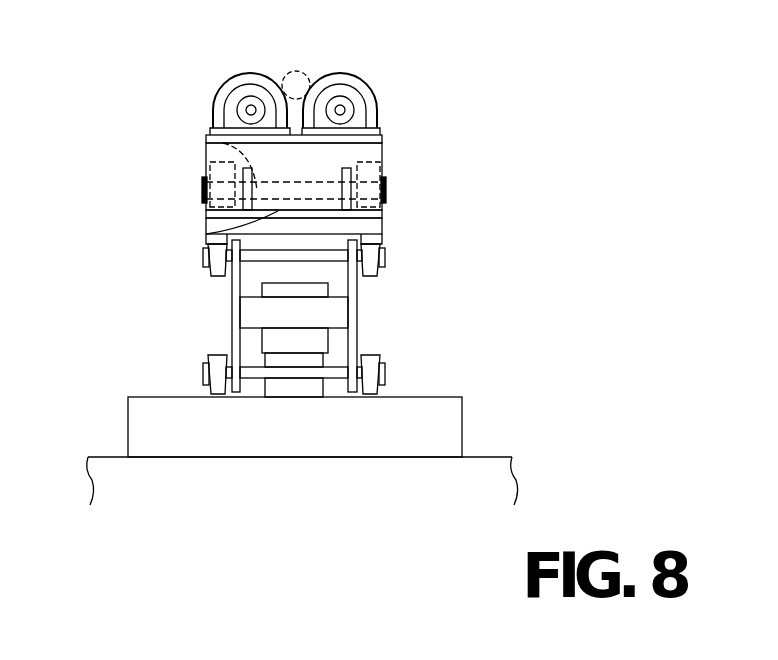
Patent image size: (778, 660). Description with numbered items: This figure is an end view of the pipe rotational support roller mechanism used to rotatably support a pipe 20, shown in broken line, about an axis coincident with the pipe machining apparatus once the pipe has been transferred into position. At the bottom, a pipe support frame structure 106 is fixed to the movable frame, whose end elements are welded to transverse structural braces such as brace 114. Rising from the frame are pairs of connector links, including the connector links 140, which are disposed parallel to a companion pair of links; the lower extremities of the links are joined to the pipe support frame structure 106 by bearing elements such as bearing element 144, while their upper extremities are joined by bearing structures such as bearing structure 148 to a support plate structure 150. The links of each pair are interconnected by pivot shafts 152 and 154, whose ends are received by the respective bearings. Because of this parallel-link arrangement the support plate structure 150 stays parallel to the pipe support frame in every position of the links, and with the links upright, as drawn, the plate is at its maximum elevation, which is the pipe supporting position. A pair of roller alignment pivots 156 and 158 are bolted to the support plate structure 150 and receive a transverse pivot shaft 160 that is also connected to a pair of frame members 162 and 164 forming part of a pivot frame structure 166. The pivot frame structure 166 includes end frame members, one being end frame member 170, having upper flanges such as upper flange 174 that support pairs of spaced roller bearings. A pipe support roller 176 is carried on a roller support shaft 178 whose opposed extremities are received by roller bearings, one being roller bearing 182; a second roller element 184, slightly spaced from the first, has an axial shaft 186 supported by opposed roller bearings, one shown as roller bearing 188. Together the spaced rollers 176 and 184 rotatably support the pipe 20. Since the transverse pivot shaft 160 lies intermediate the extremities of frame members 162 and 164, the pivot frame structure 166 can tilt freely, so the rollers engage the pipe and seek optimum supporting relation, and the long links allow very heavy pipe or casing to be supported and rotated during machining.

The pipe 20 is at (296, 71).
The pipe support frame structure 106 is at (447, 397).
The transverse structural brace 114 is at (108, 474).
The connector links 140 is at (353, 313).
The bearing element 144 is at (383, 360).
The bearing structure 148 is at (383, 270).
The support plate structure 150 is at (383, 225).
The pivot shaft 152 is at (253, 257).
The pivot shaft 154 is at (250, 363).
The roller alignment pivot 156 is at (213, 158).
The roller alignment pivot 158 is at (378, 168).
The transverse pivot shaft 160 is at (203, 185).
The frame member 162 is at (207, 134).
The frame member 164 is at (385, 194).
The pivot frame structure 166 is at (207, 231).
The end frame member 170 is at (383, 151).
The upper flange 174 is at (381, 137).
The pipe support roller 176 is at (253, 77).
The roller support shaft 178 is at (251, 110).
The roller bearing 182 is at (233, 127).
The second roller element 184 is at (330, 77).
The axial shaft 186 is at (341, 110).
The roller bearing 188 is at (357, 126).